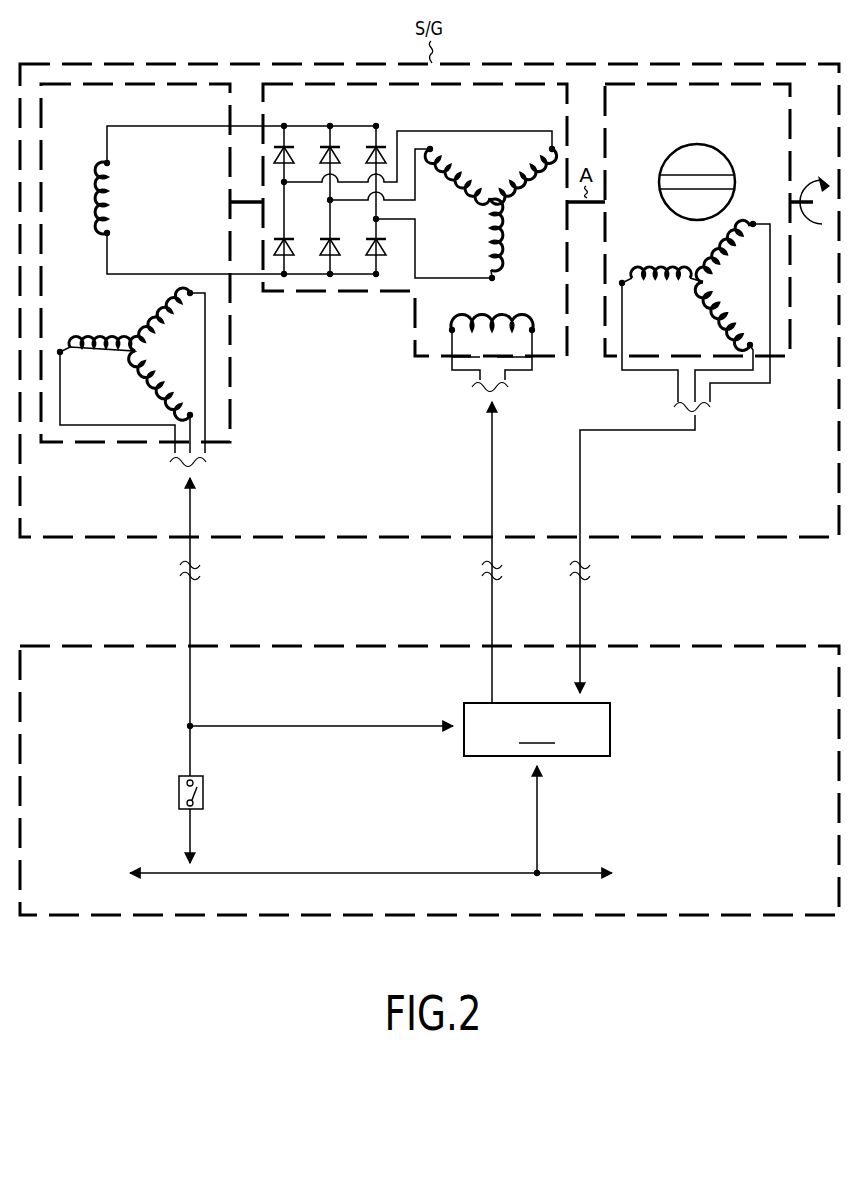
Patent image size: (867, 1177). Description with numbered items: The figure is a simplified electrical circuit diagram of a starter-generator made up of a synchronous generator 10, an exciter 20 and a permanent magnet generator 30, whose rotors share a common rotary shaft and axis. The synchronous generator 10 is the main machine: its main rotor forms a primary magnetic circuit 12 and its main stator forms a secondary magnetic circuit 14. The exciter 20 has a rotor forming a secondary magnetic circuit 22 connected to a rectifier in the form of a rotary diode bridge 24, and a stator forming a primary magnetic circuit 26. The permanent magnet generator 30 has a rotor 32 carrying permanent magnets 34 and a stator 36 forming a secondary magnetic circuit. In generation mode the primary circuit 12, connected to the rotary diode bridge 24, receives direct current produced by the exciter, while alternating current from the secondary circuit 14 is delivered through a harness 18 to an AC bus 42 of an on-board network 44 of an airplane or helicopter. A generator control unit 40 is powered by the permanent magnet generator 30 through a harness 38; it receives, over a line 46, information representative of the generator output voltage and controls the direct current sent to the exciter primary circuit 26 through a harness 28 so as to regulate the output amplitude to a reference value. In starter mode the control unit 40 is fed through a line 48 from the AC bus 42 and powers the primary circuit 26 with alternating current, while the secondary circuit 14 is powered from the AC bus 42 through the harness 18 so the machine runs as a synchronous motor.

The synchronous generator 10 is at (221, 110).
The primary magnetic circuit 12 is at (110, 208).
The secondary magnetic circuit 14 is at (123, 330).
The harness 18 is at (189, 515).
The exciter 20 is at (560, 109).
The secondary magnetic circuit 22 is at (518, 203).
The rotary diode bridge 24 is at (350, 232).
The primary magnetic circuit 26 is at (492, 328).
The harness 28 is at (491, 515).
The permanent magnet generator 30 is at (780, 109).
The rotor 32 is at (723, 157).
The permanent magnets 34 is at (688, 204).
The stator 36 is at (694, 260).
The harness 38 is at (578, 515).
The generator control unit 40 is at (611, 730).
The AC bus 42 is at (353, 872).
The on-board network 44 is at (400, 644).
The line 46 is at (332, 725).
The line 48 is at (538, 822).